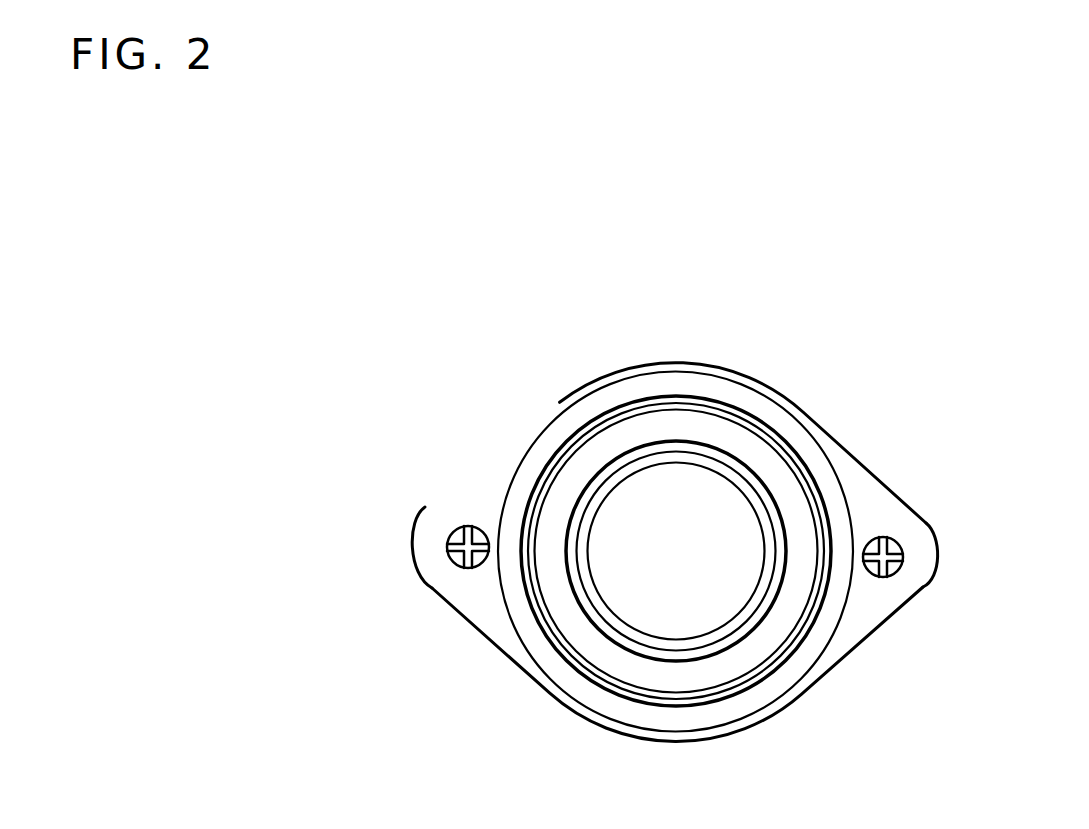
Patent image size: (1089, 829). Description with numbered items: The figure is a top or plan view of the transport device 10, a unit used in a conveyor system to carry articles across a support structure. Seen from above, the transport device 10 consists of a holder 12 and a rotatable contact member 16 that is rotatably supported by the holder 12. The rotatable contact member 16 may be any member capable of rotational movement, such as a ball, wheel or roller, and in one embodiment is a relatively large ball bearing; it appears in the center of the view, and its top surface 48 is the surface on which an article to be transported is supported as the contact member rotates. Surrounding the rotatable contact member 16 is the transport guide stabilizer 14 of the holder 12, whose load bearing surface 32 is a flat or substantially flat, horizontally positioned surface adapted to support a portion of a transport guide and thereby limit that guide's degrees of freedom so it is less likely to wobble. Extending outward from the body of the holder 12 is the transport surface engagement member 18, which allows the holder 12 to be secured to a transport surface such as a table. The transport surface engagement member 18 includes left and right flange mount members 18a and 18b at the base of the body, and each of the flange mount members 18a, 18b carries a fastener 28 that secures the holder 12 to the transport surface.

The transport device 10 is at (996, 200).
The holder 12 is at (790, 437).
The transport guide stabilizer 14 is at (648, 428).
The rotatable contact member 16 is at (633, 583).
The transport surface engagement member 18 is at (480, 465).
The left flange mount member 18a is at (440, 585).
The right flange mount member 18b is at (907, 591).
The fastener 28 is at (459, 527).
The load bearing surface 32 is at (698, 423).
The top surface 48 is at (678, 590).